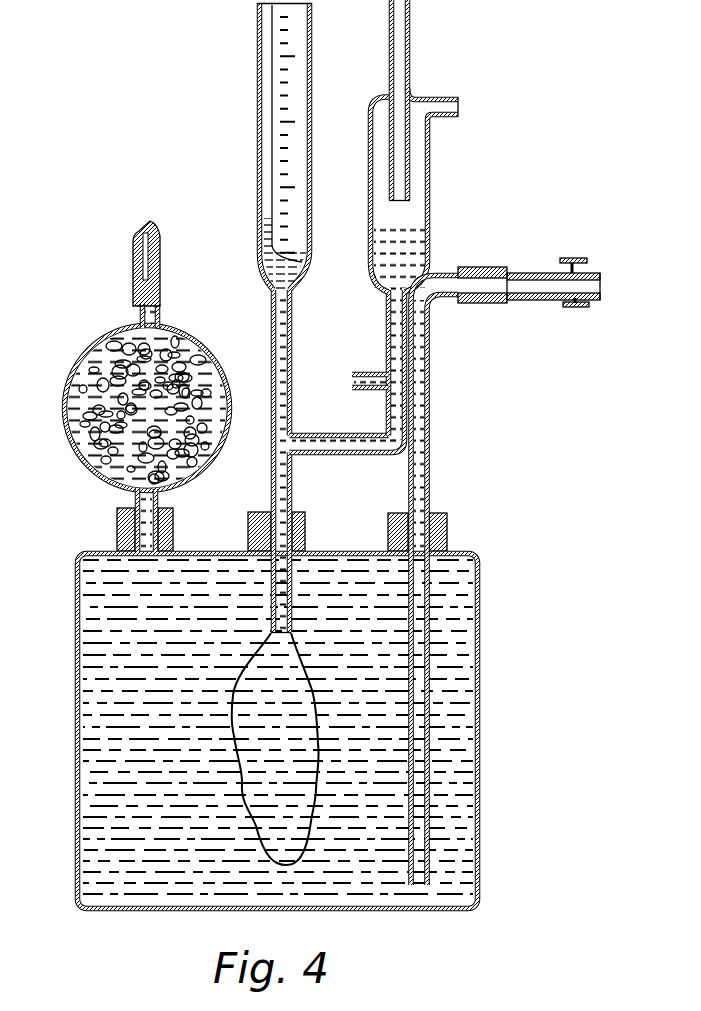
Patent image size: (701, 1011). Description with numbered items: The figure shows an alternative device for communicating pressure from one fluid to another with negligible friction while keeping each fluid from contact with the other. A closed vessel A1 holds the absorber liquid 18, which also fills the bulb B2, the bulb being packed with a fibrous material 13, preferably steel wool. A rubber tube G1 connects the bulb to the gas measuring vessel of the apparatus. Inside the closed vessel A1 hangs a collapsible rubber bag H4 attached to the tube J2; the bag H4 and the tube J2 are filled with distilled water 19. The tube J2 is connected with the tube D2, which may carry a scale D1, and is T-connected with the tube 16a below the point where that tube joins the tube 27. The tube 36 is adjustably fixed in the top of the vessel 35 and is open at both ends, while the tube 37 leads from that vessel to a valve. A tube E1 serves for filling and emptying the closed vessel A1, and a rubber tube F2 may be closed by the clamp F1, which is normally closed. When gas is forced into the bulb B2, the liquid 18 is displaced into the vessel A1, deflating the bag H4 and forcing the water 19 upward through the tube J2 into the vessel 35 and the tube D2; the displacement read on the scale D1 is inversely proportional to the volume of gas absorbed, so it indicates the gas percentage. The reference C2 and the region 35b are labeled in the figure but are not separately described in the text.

The closed vessel A1 is at (483, 616).
The bulb B2 is at (78, 463).
The liquid chamber C2 is at (259, 600).
The scale D1 is at (291, 144).
The tube D2 is at (306, 275).
The tube E1 is at (428, 450).
The clamp F1 is at (579, 307).
The rubber tube F2 is at (519, 301).
The rubber tube G1 is at (164, 250).
The collapsible bag H4 is at (313, 723).
The tube J2 is at (291, 481).
The fibrous material 13 is at (68, 424).
The tube 16a is at (317, 433).
The absorber liquid 18 is at (72, 738).
The distilled water 19 is at (406, 262).
The tube 27 is at (374, 371).
The vessel 35 is at (431, 204).
The annular chamber 35b is at (418, 154).
The tube 36 is at (414, 69).
The tube 37 is at (451, 96).